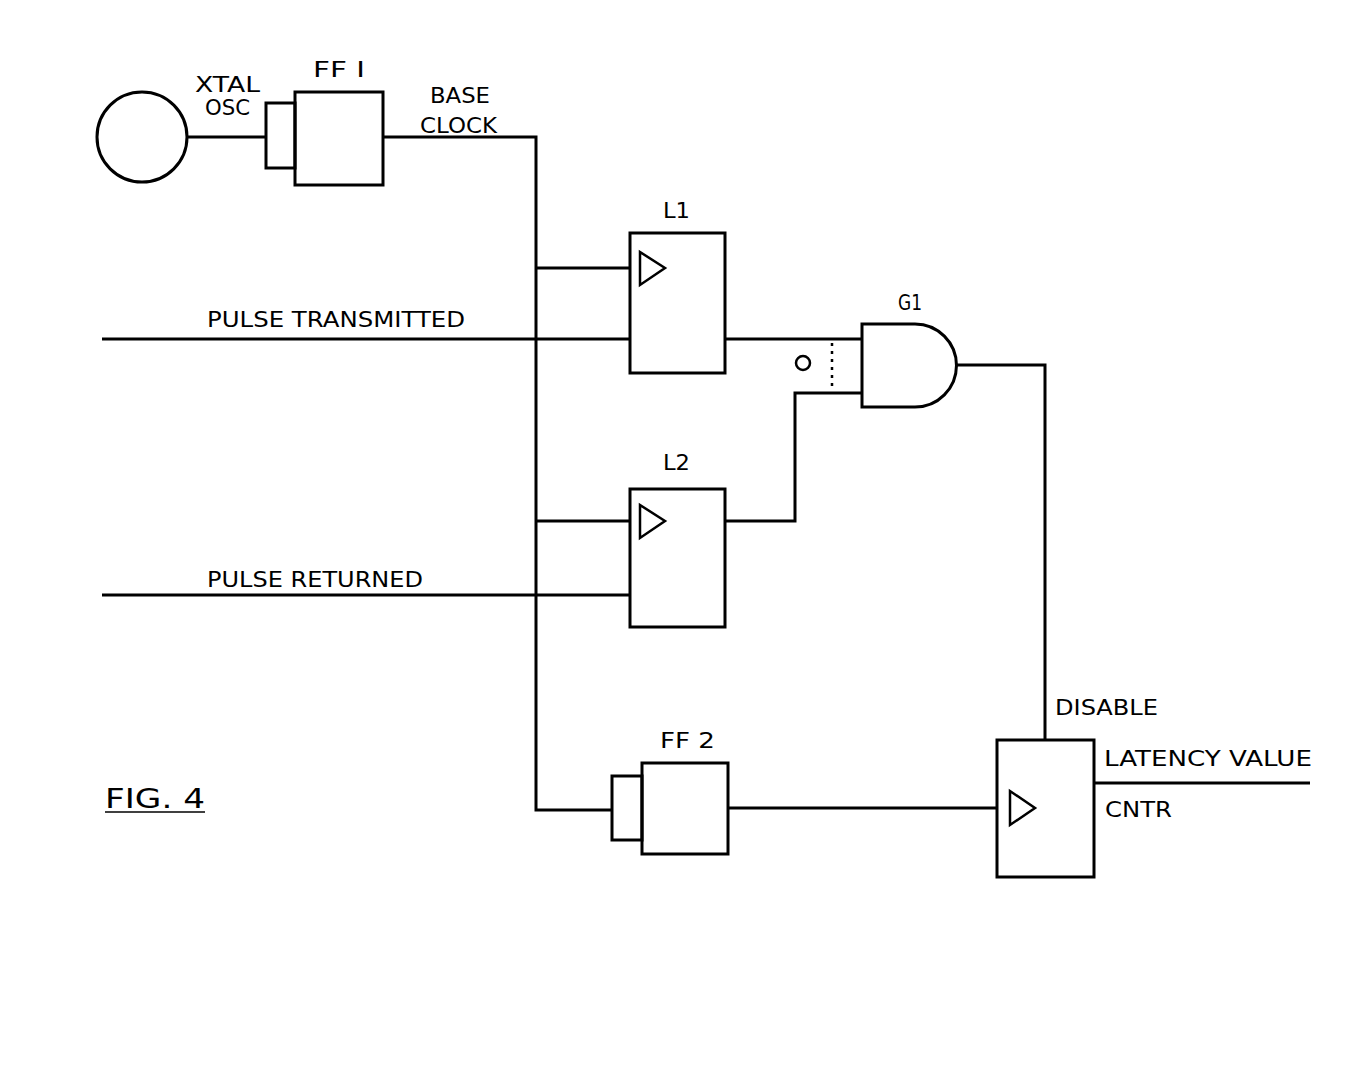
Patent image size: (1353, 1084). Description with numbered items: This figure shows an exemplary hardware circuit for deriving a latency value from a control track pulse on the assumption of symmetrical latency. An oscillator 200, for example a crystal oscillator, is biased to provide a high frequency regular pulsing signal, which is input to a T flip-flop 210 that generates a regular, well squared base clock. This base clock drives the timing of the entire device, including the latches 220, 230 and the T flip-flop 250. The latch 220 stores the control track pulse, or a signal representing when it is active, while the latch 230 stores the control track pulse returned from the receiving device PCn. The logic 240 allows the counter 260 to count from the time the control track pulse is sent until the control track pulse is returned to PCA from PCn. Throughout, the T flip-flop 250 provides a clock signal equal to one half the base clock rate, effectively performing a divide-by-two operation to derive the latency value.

The oscillator 200 is at (160, 183).
The T flip-flop 210 is at (360, 185).
The latch 220 is at (700, 373).
The latch 230 is at (700, 627).
The logic 240 is at (900, 407).
The T flip-flop 250 is at (705, 854).
The counter 260 is at (1070, 877).